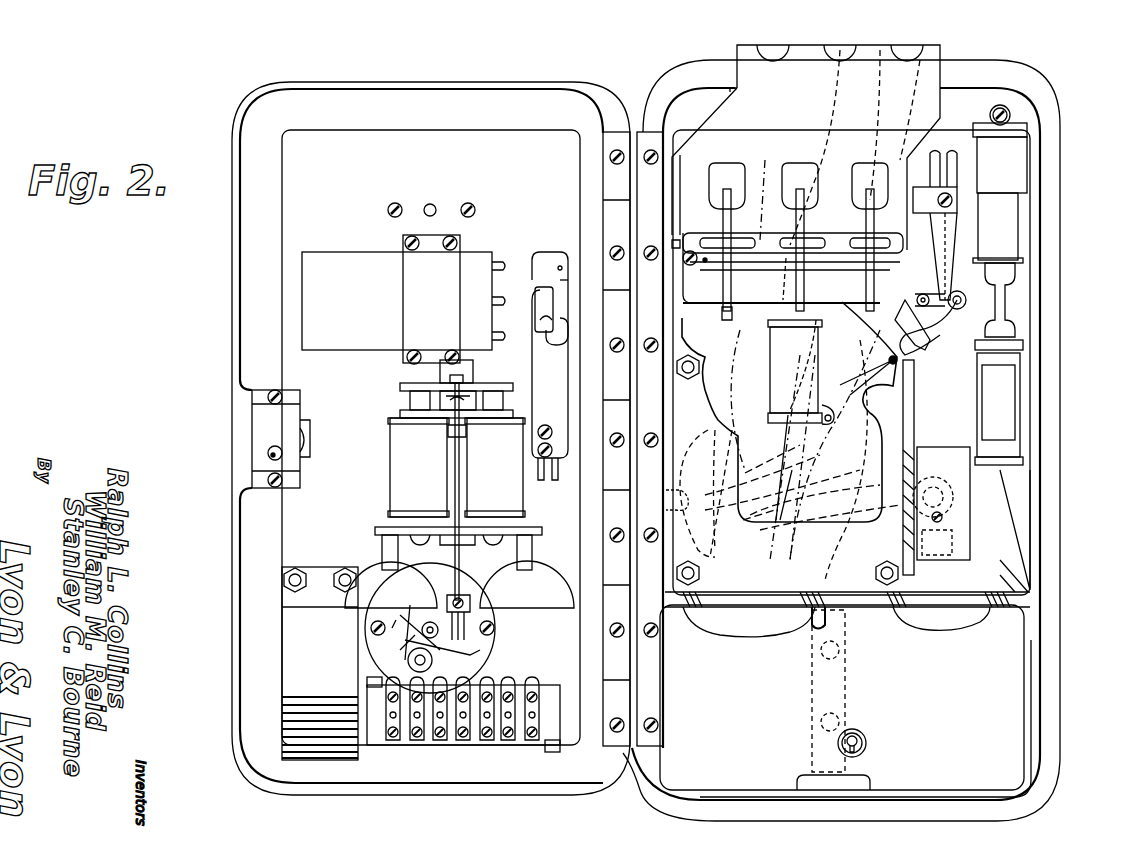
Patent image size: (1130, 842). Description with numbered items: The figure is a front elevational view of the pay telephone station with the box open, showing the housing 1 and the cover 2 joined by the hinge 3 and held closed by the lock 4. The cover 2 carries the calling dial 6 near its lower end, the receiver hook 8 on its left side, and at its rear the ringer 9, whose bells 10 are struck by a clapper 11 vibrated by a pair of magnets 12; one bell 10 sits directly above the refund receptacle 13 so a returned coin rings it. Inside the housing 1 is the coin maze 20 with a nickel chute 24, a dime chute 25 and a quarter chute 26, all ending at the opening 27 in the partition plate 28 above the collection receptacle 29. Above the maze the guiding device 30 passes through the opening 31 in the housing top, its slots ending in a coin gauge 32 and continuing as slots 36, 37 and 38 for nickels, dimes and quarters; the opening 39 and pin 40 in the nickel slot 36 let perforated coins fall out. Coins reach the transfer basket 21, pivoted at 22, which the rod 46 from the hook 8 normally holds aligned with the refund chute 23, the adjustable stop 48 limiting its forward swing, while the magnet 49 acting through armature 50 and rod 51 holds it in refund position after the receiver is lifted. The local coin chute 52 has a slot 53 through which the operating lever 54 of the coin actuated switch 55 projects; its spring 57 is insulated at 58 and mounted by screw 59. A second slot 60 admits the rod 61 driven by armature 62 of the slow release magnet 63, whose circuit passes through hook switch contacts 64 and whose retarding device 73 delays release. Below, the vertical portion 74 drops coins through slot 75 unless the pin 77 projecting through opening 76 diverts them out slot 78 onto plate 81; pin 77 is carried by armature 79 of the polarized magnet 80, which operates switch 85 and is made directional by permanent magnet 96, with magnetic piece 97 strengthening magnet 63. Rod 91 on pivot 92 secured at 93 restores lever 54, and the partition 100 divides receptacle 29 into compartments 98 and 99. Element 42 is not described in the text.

The housing 1 is at (1050, 735).
The cover 2 is at (232, 196).
The hinge 3 is at (630, 175).
The lock 4 is at (255, 405).
The calling dial 6 is at (478, 653).
The hook 8 is at (540, 302).
The ringer 9 is at (390, 472).
The gongs or bells 10 is at (555, 560).
The clapper 11 is at (460, 478).
The magnets 12 is at (480, 437).
The coin return or refund receptacle 13 is at (306, 617).
The coin maze 20 is at (862, 526).
The transfer basket 21 is at (727, 230).
The pivot 22 is at (873, 235).
The refund chute 23 is at (700, 292).
The slot or chute 24 is at (880, 300).
The second slot or chute 25 is at (790, 250).
The third chute 26 is at (700, 302).
The opening 27 is at (728, 600).
The partitioned plate 28 is at (1016, 606).
The collection receptacle 29 is at (1007, 686).
The guiding device 30 is at (940, 60).
The opening 31 is at (735, 88).
The coin gauge 32 is at (895, 52).
The slot 36 is at (878, 105).
The slot 37 is at (845, 60).
The slot 38 is at (773, 62).
The opening 39 is at (868, 165).
The pin 40 is at (870, 186).
The contact rail 42 is at (700, 305).
The rod 46 is at (560, 330).
The adjustable stop 48 is at (683, 260).
The magnet 49 is at (812, 370).
The armature 50 is at (826, 425).
The rod 51 is at (768, 330).
The local coin chute 52 is at (1020, 337).
The slot 53 is at (948, 332).
The operating lever 54 is at (912, 326).
The coin actuated switch 55 is at (945, 290).
The spring 57 is at (946, 275).
The insulation 58 is at (952, 182).
The screw 59 is at (920, 190).
The second slot 60 is at (880, 365).
The rod 61 is at (960, 200).
The armature 62 is at (930, 250).
The magnet 63 is at (1018, 215).
The hook switch contacts 64 is at (546, 256).
The retarding device 73 is at (1020, 150).
The vertically extending portion 74 is at (975, 420).
The slot 75 is at (920, 612).
The opening 76 is at (908, 528).
The pin or rod 77 is at (978, 402).
The slot 78 is at (1010, 485).
The armature 79 is at (1025, 352).
The magnet 80 is at (1022, 385).
The plate 81 is at (1025, 525).
The switch 85 is at (975, 490).
The rod 91 is at (1003, 308).
The pivot 92 is at (1010, 287).
The securing point 93 is at (952, 300).
The permanent magnet 96 is at (1025, 452).
The piece of magnetic material 97 is at (1004, 318).
The compartment 98 is at (758, 638).
The compartment 99 is at (950, 628).
The partition 100 is at (813, 630).